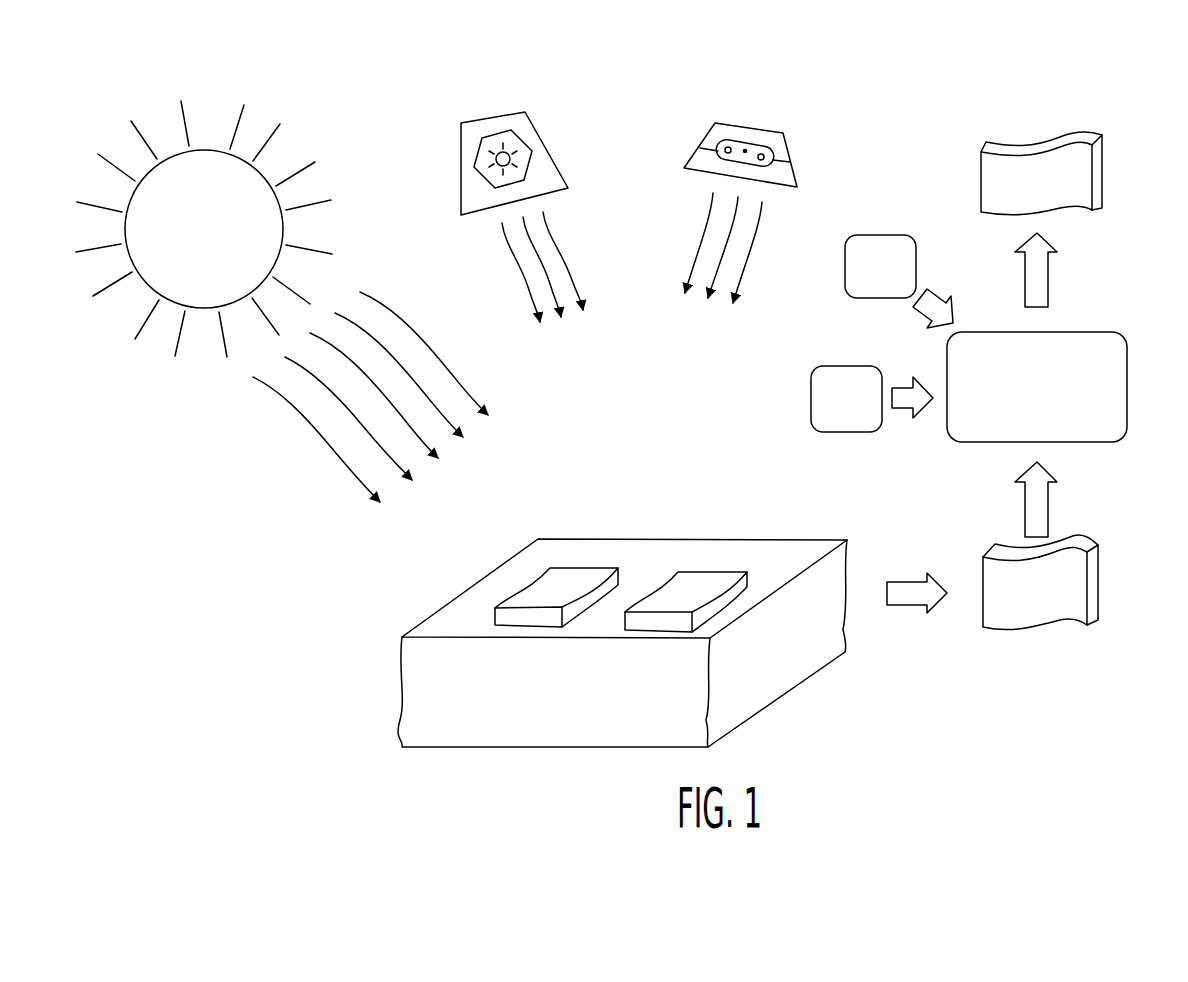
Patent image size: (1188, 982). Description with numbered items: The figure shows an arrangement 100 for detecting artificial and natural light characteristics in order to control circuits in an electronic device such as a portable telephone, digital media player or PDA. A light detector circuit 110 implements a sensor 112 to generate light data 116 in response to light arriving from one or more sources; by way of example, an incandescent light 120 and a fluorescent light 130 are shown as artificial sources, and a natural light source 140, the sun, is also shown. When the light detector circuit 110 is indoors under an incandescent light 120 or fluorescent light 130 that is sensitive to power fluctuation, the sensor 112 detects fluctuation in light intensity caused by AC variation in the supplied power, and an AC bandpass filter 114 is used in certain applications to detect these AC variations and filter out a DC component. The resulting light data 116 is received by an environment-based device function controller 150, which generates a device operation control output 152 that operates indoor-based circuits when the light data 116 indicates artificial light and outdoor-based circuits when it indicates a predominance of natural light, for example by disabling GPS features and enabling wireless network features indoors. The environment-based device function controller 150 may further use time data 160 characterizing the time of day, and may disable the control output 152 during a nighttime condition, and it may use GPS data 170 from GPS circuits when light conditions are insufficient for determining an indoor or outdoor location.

The arrangement 100 is at (1027, 720).
The light detector circuit 110 is at (793, 540).
The sensor 112 is at (582, 565).
The AC bandpass filter 114 is at (710, 567).
The light data 116 is at (1100, 565).
The incandescent light 120 is at (547, 140).
The fluorescent light 130 is at (788, 150).
The natural light source 140 is at (306, 141).
The environment-based device function controller 150 is at (1127, 347).
The control output 152 is at (1103, 163).
The time data 160 is at (880, 235).
The GPS data 170 is at (810, 400).